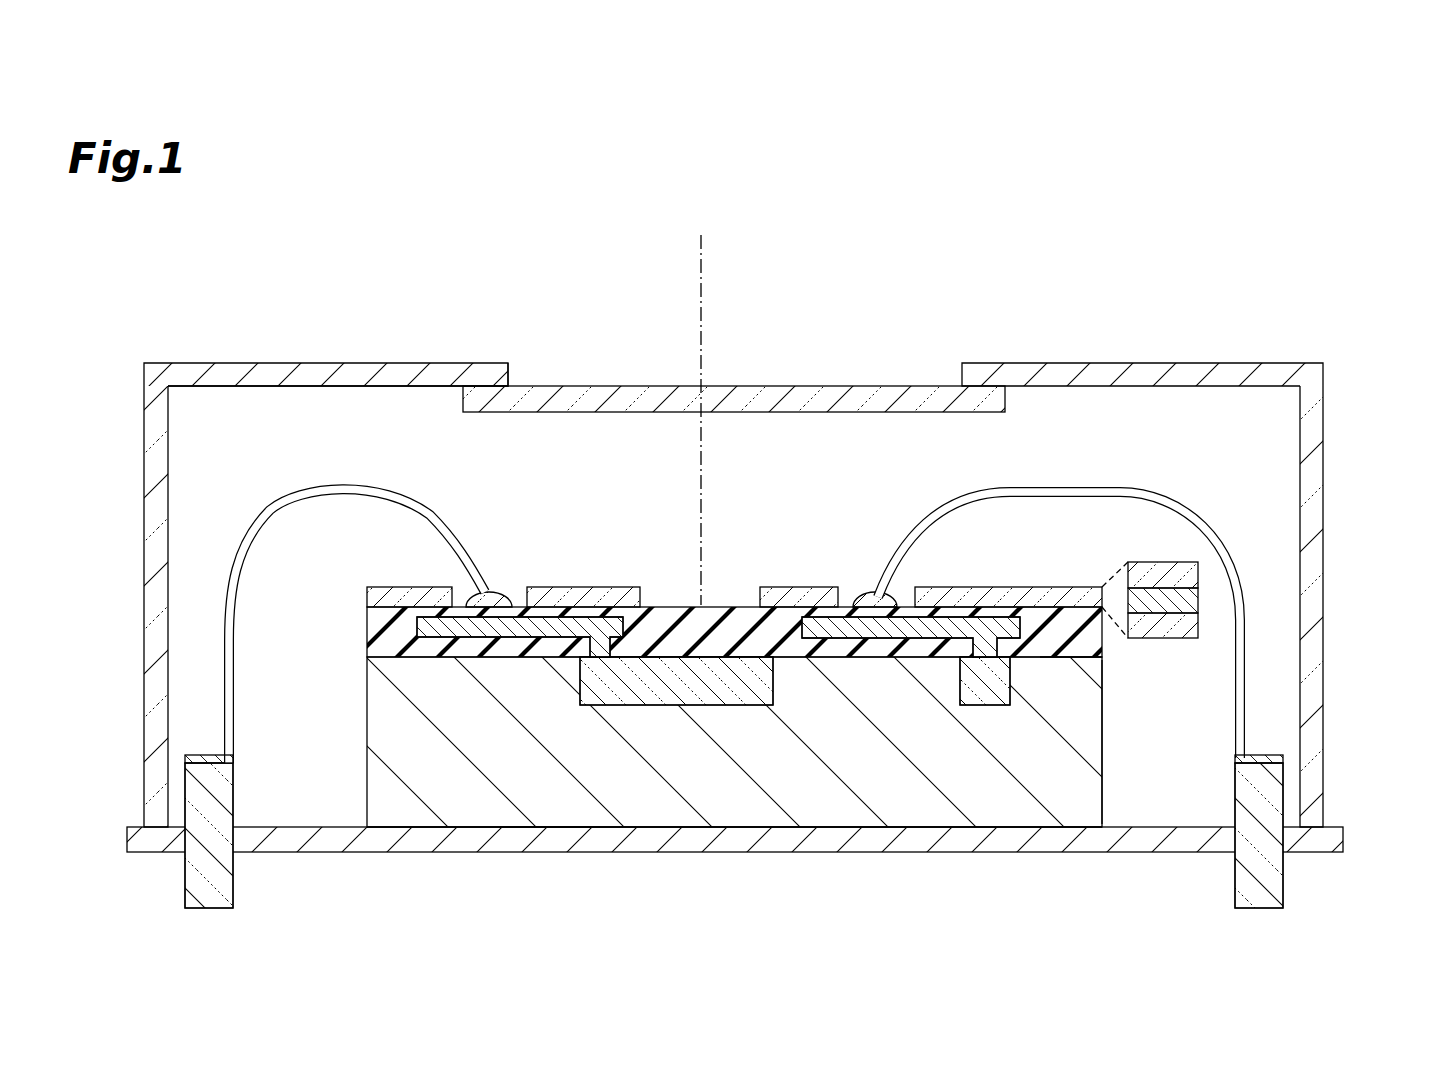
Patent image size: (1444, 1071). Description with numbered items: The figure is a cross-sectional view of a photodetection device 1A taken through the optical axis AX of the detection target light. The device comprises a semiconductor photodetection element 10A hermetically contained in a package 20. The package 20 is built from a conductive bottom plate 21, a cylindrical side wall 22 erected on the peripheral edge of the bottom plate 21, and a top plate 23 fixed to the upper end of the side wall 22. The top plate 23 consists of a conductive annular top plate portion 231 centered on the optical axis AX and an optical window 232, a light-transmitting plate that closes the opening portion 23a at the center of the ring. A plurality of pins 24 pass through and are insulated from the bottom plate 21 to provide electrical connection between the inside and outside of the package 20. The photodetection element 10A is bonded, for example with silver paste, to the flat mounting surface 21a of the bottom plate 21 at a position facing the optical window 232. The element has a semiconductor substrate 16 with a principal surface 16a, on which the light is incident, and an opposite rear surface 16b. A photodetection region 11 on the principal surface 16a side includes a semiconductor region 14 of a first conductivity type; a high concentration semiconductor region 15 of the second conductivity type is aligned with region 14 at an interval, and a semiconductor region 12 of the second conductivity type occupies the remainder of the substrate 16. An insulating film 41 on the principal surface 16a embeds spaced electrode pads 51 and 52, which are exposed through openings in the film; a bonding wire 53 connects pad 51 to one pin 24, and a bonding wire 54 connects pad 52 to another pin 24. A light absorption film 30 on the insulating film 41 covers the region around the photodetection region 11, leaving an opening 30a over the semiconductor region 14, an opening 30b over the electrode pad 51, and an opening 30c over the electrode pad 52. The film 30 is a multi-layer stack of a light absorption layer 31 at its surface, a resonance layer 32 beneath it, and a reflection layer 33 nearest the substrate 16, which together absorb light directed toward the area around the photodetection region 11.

The photodetection device 1A is at (1252, 298).
The semiconductor photodetection element 10A is at (812, 681).
The photodetection region 11 is at (762, 733).
The semiconductor region of second conductivity type 12 is at (938, 802).
The semiconductor region of first conductivity type 14 is at (624, 684).
The high concentration semiconductor region of second conductivity type 15 is at (992, 682).
The semiconductor substrate 16 is at (1113, 768).
The principal surface 16a is at (1082, 656).
The rear surface 16b is at (548, 828).
The package 20 is at (736, 543).
The bottom plate 21 is at (672, 841).
The mounting surface 21a is at (757, 823).
The side wall 22 is at (160, 540).
The top plate 23 is at (893, 335).
The opening portion 23a is at (509, 379).
The top plate portion 231 is at (1110, 378).
The optical window 232 is at (830, 404).
The pin 24 is at (210, 903).
The light absorption film 30 is at (903, 602).
The opening 30a is at (760, 596).
The opening 30b is at (493, 595).
The opening 30c is at (867, 597).
The light absorption layer 31 is at (1199, 572).
The resonance layer 32 is at (1199, 600).
The reflection layer 33 is at (1199, 628).
The insulating film 41 is at (665, 619).
The electrode pad 51 is at (472, 641).
The electrode pad 52 is at (848, 641).
The bonding wire 53 is at (333, 493).
The bonding wire 54 is at (1107, 486).
The optical axis AX is at (697, 262).